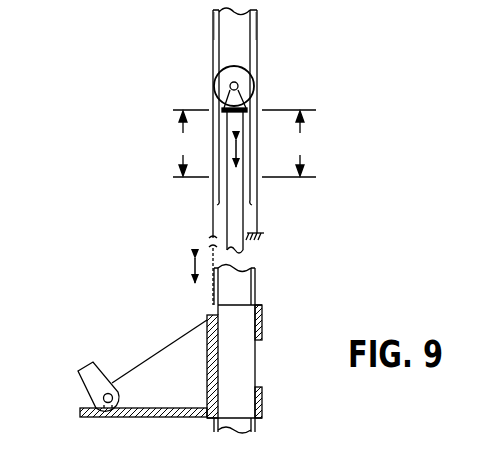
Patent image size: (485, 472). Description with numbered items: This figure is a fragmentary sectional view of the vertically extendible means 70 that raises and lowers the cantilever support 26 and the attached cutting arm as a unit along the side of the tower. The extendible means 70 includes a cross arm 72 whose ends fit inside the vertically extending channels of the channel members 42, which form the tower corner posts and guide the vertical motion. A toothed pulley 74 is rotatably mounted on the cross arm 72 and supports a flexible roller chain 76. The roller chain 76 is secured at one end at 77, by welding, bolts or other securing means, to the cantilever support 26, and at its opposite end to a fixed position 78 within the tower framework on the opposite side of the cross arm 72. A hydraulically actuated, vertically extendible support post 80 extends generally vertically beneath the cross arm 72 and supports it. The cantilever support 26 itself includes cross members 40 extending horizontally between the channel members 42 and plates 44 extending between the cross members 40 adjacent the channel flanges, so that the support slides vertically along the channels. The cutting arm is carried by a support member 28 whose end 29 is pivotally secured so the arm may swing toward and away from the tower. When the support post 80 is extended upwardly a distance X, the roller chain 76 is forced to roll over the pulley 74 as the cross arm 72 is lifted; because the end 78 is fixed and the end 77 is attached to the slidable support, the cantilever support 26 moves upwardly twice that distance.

The cantilever support 26 is at (157, 352).
The support member 28 is at (88, 373).
The end of support member 29 is at (108, 410).
The cross members 40 is at (262, 326).
The channel members 42 is at (240, 22).
The plates 44 is at (250, 379).
The vertically extendible means 70 is at (165, 102).
The cross arm 72 is at (250, 108).
The toothed pulley 74 is at (245, 75).
The roller chain 76 is at (213, 213).
The chain end secured to cantilever support 77 is at (213, 305).
The fixed position 78 is at (262, 232).
The support post 80 is at (243, 247).